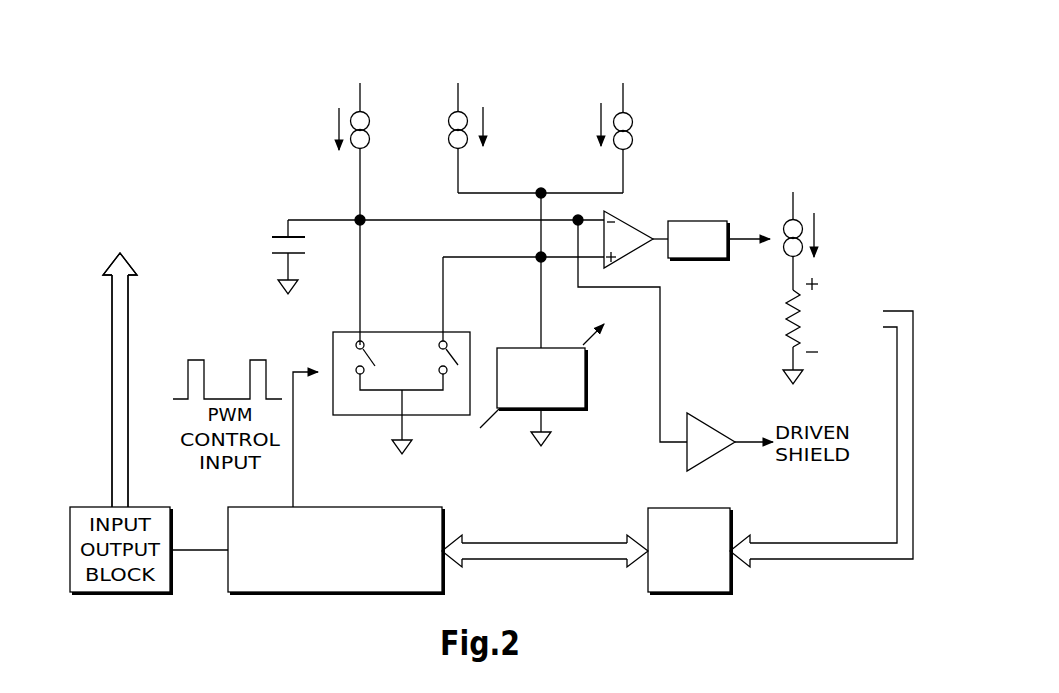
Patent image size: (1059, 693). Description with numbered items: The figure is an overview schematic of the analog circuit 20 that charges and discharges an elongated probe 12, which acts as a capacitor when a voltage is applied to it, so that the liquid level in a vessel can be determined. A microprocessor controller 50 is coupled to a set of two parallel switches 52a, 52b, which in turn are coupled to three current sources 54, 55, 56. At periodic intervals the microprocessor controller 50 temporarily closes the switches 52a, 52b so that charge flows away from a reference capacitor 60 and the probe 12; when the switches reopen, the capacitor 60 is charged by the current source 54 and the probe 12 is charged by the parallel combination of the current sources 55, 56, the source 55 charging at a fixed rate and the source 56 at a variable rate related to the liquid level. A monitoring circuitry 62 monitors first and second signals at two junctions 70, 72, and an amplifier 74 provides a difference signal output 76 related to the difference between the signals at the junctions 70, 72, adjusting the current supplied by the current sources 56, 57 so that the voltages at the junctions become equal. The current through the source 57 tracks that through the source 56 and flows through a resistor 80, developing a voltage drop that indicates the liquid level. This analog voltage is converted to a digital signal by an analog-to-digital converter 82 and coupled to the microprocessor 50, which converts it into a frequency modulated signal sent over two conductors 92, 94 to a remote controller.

The elongated probe 12 is at (572, 367).
The analog circuit 20 is at (258, 186).
The microprocessor controller 50 is at (333, 580).
The switch 52a is at (374, 356).
The switch 52b is at (456, 362).
The current source 54 is at (366, 119).
The current source 55 is at (448, 140).
The current source 56 is at (620, 120).
The current source 57 is at (798, 222).
The reference capacitor 60 is at (272, 243).
The monitoring circuitry 62 is at (750, 171).
The junction 70 is at (579, 212).
The junction 72 is at (540, 262).
The amplifier 74 is at (628, 244).
The difference signal output 76 is at (661, 222).
The resistor 80 is at (785, 318).
The analog-to-digital converter 82 is at (695, 580).
The conductor 92 is at (121, 387).
The conductor 94 is at (121, 387).